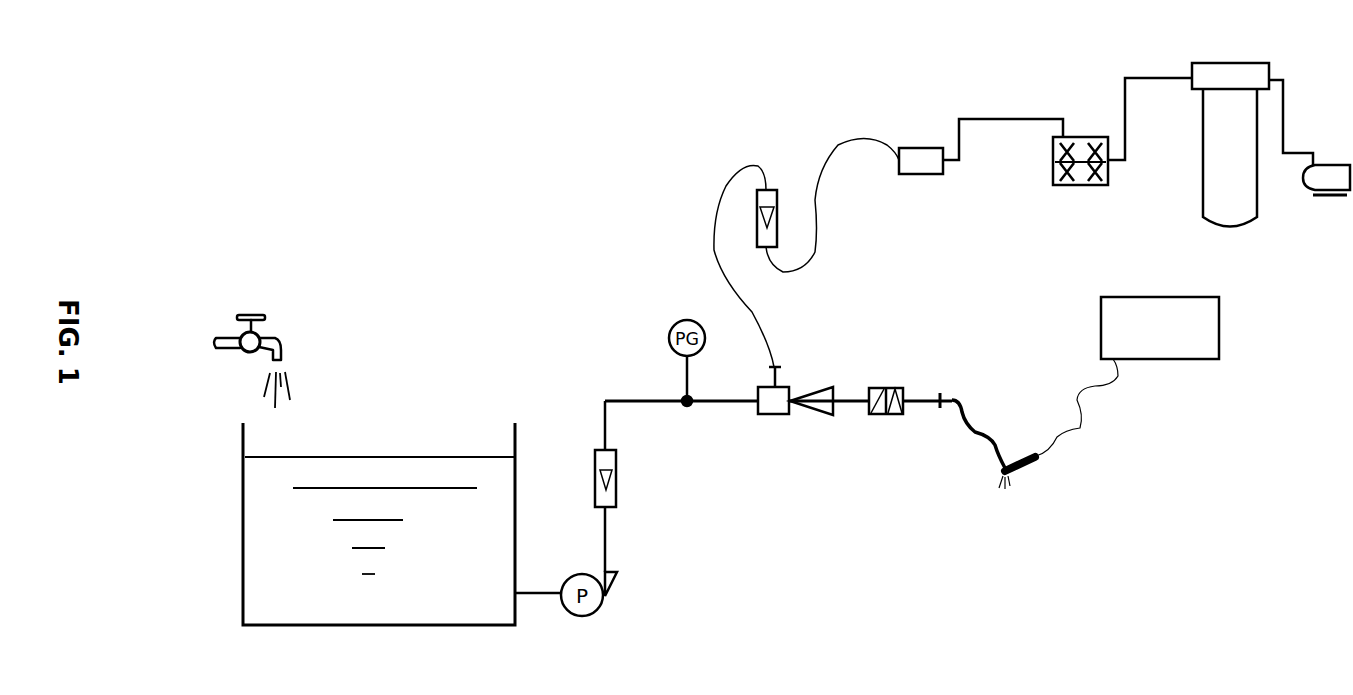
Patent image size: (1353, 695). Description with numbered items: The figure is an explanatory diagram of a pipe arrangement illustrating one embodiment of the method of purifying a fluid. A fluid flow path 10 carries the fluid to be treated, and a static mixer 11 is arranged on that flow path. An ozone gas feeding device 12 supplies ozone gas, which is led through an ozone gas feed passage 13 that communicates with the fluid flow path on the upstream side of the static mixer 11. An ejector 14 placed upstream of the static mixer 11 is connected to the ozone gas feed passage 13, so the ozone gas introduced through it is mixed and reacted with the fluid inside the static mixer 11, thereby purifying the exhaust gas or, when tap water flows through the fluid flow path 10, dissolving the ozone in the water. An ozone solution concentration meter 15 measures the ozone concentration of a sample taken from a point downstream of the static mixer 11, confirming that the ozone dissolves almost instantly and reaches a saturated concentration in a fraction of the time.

The fluid flow path 10 is at (710, 405).
The static mixer 11 is at (895, 388).
The ozone gas feeding device 12 is at (1085, 137).
The ozone gas feed passage 13 is at (752, 309).
The ejector 14 is at (775, 414).
The ozone solution concentration meter 15 is at (1205, 297).